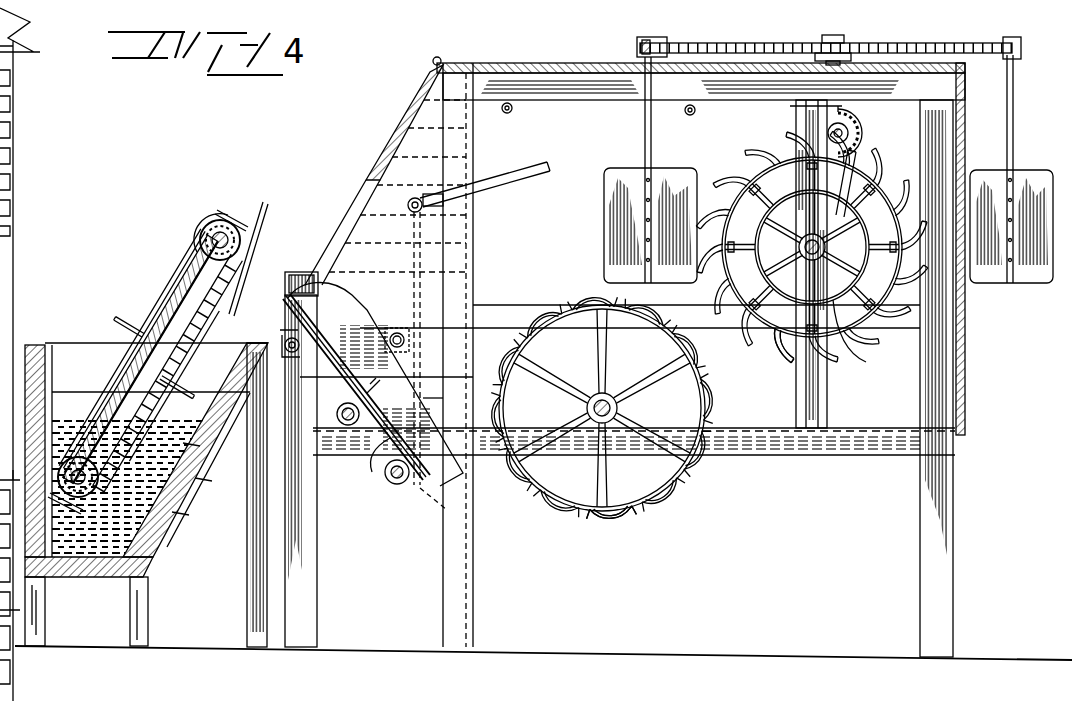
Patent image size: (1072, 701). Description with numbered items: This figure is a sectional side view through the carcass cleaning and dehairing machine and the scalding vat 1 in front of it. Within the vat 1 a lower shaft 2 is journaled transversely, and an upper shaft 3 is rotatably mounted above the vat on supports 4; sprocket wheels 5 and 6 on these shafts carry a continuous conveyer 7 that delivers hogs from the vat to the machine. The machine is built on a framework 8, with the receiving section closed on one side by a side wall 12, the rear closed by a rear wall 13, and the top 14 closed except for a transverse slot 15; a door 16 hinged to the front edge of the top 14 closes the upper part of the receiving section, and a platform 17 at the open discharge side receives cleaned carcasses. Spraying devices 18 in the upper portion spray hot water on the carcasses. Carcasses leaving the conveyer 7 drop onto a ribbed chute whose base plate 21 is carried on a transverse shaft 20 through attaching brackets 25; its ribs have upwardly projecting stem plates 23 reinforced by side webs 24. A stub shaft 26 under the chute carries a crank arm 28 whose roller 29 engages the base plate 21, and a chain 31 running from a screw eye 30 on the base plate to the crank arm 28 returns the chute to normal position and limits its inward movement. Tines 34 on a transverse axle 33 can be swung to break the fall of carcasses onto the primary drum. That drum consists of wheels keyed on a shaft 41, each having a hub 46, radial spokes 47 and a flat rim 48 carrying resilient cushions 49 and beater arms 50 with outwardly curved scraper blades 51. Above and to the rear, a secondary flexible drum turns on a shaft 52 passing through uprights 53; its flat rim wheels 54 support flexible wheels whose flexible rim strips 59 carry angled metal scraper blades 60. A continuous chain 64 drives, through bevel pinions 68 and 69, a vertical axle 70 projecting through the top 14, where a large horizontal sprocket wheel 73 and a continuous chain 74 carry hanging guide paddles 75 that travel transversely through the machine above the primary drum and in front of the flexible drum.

The scalding vat 1 is at (160, 548).
The lower shaft 2 is at (60, 477).
The upper shaft 3 is at (212, 230).
The supports 4 is at (247, 246).
The sprocket wheel 5 is at (140, 390).
The sprocket wheel 6 is at (196, 255).
The continuous conveyer 7 is at (178, 290).
The framework 8 is at (925, 572).
The side wall 12 is at (425, 190).
The rear wall 13 is at (966, 358).
The top 14 is at (528, 66).
The transverse slot 15 is at (628, 82).
The door 16 is at (410, 122).
The platform 17 is at (490, 306).
The spraying devices 18 is at (513, 110).
The transverse shaft 20 is at (388, 480).
The base plate 21 is at (372, 460).
The stem plates 23 is at (383, 380).
The side webs 24 is at (352, 310).
The attaching brackets 25 is at (418, 486).
The stub shaft 26 is at (338, 418).
The crank arm 28 is at (342, 392).
The roller 29 is at (383, 330).
The screw eye 30 is at (290, 320).
The chain 31 is at (285, 340).
The transverse axle 33 is at (413, 228).
The tines 34 is at (505, 183).
The shaft 41 is at (618, 408).
The hub 46 is at (586, 403).
The radial spokes 47 is at (598, 350).
The rim 48 is at (668, 340).
The resilient cushions 49 is at (702, 474).
The beater arms 50 is at (578, 527).
The scraper blades 51 is at (662, 517).
The shaft 52 is at (792, 243).
The uprights 53 is at (813, 264).
The flat rim wheels 54 is at (862, 345).
The flexible rim strips 59 is at (876, 213).
The scraper blades 60 is at (785, 340).
The continuous chain 64 is at (858, 177).
The bevel pinion 68 is at (849, 136).
The bevel pinion 69 is at (860, 125).
The vertical axle 70 is at (842, 106).
The sprocket wheel 73 is at (792, 46).
The continuous chain 74 is at (662, 32).
The guide paddles 75 is at (604, 208).